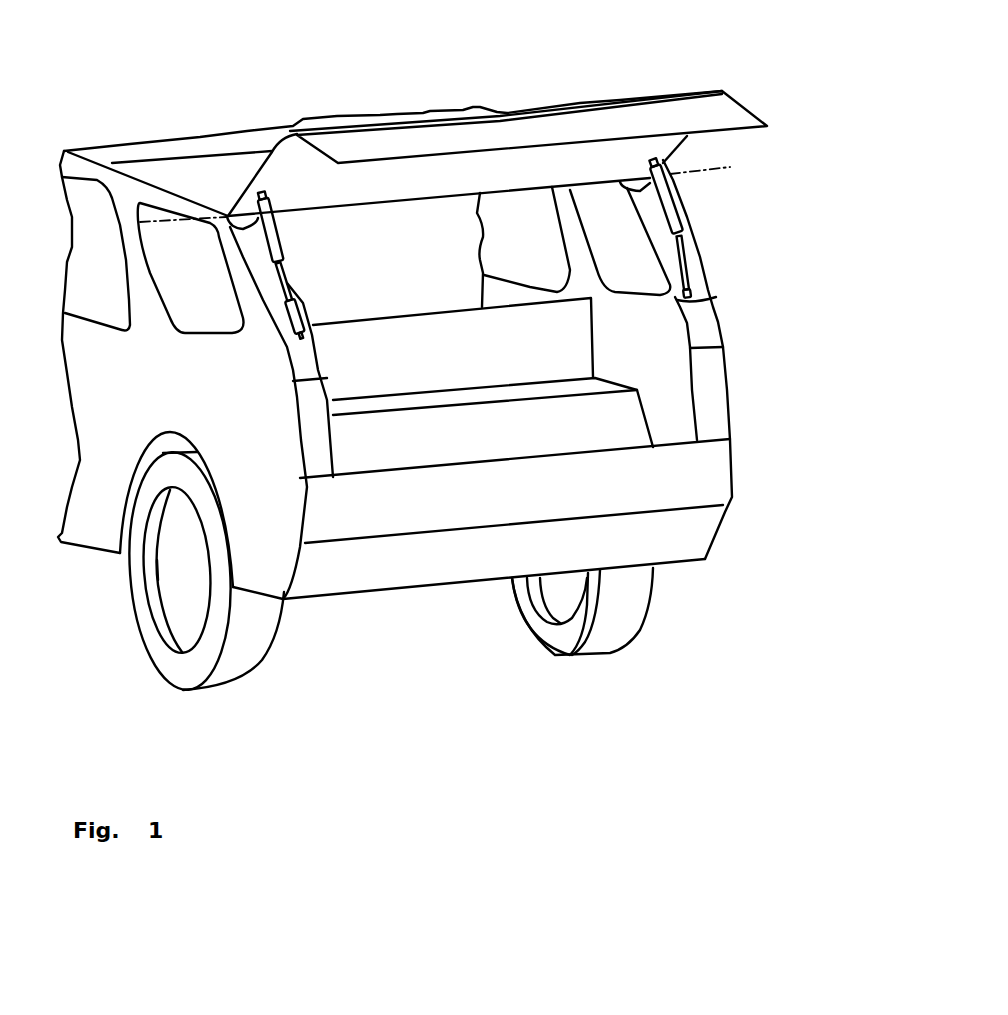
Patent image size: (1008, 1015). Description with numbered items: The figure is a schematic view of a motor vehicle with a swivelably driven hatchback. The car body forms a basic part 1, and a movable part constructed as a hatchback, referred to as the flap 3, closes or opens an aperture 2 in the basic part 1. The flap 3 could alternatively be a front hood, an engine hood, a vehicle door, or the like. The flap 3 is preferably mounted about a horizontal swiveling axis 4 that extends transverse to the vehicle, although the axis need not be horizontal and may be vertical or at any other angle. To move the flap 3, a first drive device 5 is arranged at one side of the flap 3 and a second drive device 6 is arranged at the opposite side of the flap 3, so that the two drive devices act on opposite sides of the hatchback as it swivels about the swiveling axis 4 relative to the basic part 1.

The basic part 1 is at (273, 567).
The aperture 2 is at (748, 428).
The flap 3 is at (727, 112).
The swiveling axis 4 is at (686, 170).
The first drive device 5 is at (287, 304).
The second drive device 6 is at (676, 238).